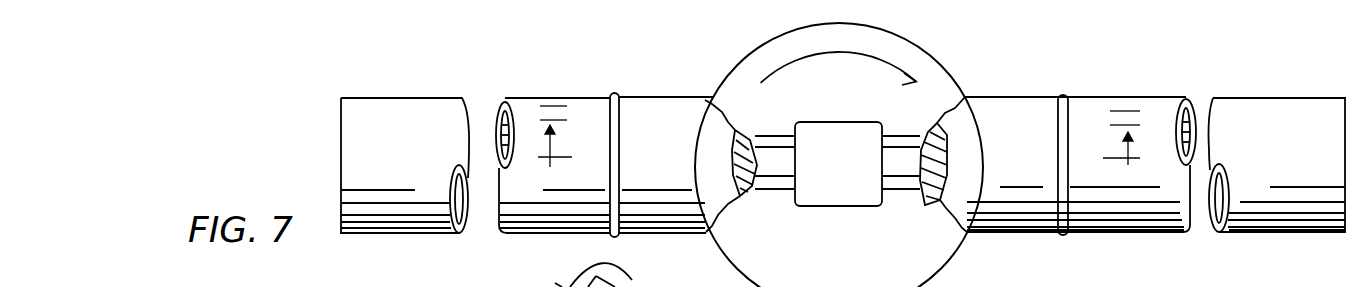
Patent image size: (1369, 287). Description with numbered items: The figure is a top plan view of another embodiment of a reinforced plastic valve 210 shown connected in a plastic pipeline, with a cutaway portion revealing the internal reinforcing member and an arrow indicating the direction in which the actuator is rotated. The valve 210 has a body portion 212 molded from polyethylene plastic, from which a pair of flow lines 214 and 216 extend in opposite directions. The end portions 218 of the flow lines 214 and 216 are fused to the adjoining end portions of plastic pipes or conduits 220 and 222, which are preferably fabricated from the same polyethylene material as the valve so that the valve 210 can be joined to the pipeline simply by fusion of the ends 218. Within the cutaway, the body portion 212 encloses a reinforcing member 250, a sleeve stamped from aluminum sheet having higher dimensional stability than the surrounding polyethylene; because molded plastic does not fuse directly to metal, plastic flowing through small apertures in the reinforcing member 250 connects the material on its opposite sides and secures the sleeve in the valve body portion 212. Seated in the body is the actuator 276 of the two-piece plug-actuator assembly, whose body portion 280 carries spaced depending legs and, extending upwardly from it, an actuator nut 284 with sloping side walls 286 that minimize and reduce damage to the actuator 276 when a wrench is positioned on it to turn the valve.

The reinforced plastic valve 210 is at (728, 45).
The body portion 212 is at (718, 72).
The flow line 214 is at (681, 97).
The flow line 216 is at (1000, 97).
The end portions 218 is at (640, 97).
The plastic pipe or conduit 220 is at (409, 97).
The plastic pipe or conduit 222 is at (1252, 95).
The reinforcing member 250 is at (947, 148).
The actuator 276 is at (858, 257).
The body portion 280 is at (858, 157).
The actuator nut 284 is at (607, 265).
The sloping side walls 286 is at (562, 286).